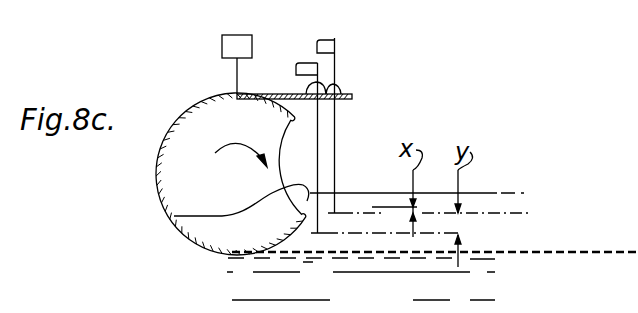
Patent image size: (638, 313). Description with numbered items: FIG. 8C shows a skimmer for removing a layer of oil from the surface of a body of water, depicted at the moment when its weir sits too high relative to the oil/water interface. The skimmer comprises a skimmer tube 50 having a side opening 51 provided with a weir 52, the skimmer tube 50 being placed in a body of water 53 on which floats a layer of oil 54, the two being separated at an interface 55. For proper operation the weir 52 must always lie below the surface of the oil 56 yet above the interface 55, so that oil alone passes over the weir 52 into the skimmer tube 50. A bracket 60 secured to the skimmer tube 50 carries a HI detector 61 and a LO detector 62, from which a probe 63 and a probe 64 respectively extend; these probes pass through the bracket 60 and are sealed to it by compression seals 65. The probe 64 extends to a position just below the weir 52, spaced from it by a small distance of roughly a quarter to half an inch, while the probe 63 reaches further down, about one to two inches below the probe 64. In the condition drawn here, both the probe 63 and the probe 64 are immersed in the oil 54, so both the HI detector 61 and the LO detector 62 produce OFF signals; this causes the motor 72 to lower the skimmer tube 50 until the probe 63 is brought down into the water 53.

The skimmer tube 50 is at (162, 163).
The side opening 51 is at (297, 163).
The weir 52 is at (283, 190).
The body of water 53 is at (502, 283).
The layer of oil 54 is at (502, 217).
The interface 55 is at (480, 250).
The surface of the oil 56 is at (480, 193).
The bracket 60 is at (352, 98).
The HI detector 61 is at (335, 38).
The LO detector 62 is at (318, 63).
The probe 63 is at (320, 110).
The probe 64 is at (368, 125).
The compression seals 65 is at (326, 83).
The motor 72 is at (222, 50).